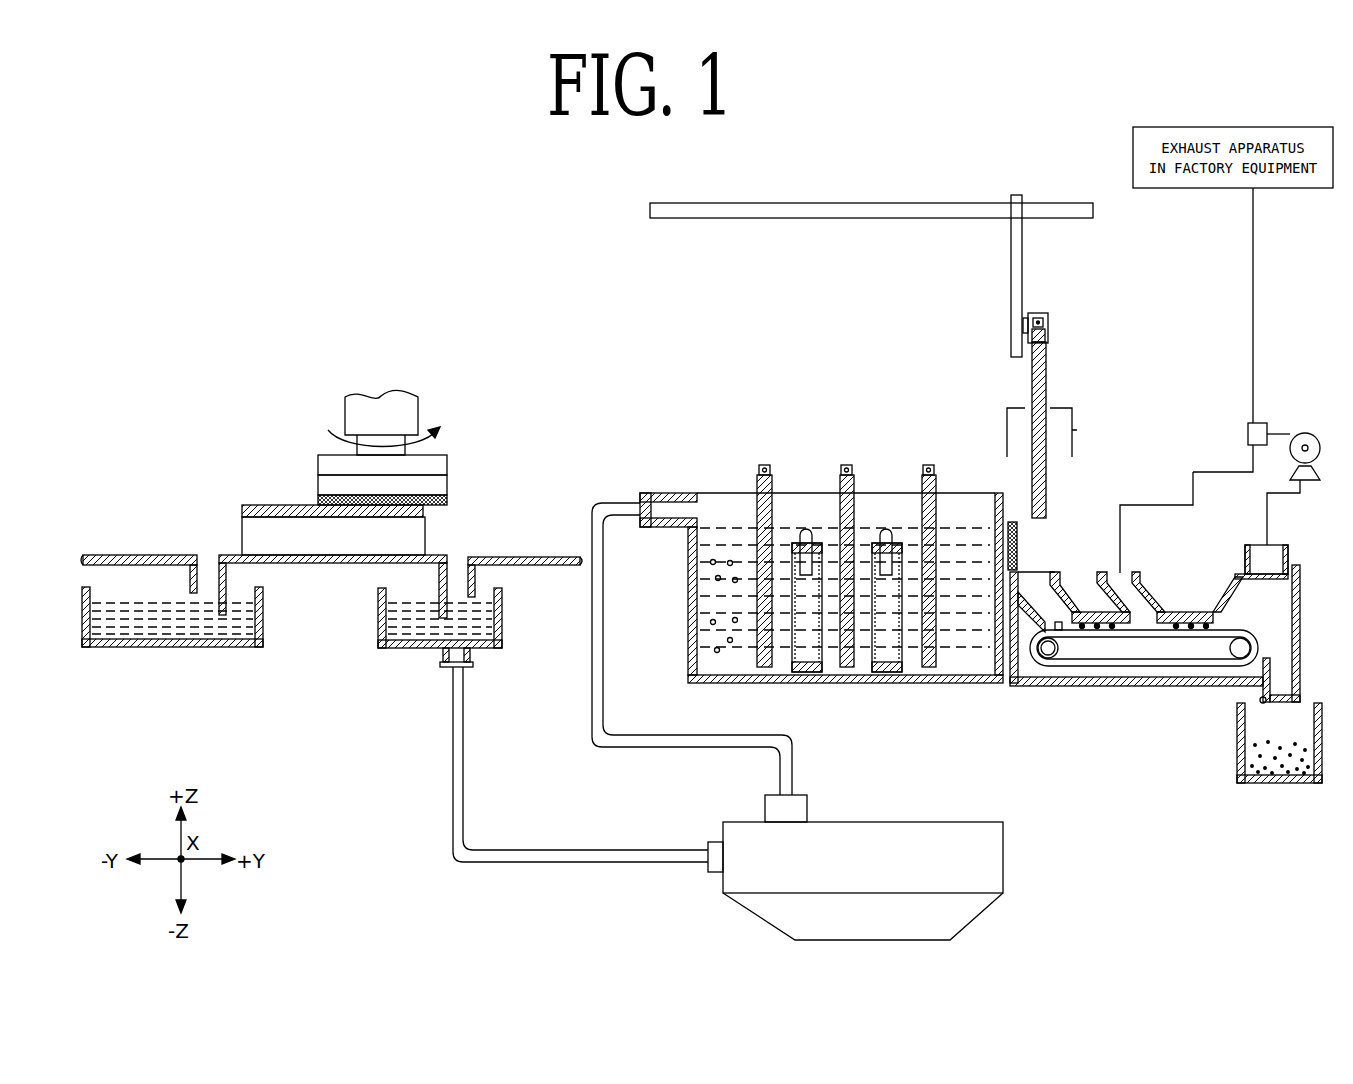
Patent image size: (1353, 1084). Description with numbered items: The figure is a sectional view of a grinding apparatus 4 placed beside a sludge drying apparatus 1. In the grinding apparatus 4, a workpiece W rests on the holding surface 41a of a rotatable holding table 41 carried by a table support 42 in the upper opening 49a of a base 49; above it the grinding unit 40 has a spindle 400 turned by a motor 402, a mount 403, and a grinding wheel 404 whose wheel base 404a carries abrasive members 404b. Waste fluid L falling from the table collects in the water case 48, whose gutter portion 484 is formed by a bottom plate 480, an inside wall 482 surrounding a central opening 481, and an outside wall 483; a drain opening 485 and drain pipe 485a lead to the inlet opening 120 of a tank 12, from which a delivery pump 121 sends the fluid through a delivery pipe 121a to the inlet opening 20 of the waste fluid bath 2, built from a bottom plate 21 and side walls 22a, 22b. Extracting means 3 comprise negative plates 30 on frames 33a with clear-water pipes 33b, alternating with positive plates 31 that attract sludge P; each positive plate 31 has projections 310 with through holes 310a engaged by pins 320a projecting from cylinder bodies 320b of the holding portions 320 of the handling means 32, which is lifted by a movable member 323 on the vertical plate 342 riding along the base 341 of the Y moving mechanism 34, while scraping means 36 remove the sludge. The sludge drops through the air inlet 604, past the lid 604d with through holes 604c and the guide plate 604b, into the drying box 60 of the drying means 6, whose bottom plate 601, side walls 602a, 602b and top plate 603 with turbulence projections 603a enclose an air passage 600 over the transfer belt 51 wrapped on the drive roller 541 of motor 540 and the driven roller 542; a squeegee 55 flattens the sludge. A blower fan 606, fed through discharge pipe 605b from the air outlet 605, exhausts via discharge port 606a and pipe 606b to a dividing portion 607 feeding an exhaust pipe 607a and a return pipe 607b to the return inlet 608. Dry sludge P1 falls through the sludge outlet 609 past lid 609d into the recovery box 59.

The sludge drying apparatus 1 is at (740, 392).
The waste fluid bath 2 is at (969, 530).
The extracting means 3 is at (1143, 352).
The grinding apparatus 4 is at (260, 356).
The drying means 6 is at (1160, 472).
The tank 12 is at (1018, 861).
The inlet opening 20 is at (650, 493).
The bottom plate 21 is at (848, 690).
The side wall 22a is at (731, 523).
The side wall 22b is at (690, 600).
The negative plate 30 is at (810, 675).
The positive plate 31 is at (762, 470).
The handling means 32 is at (1055, 306).
The frame 33a is at (805, 545).
The pipe 33b is at (880, 565).
The Y moving mechanism 34 is at (1085, 235).
The scraping means 36 is at (1075, 430).
The grinding unit 40 is at (335, 384).
The holding table 41 is at (255, 535).
The holding surface 41a is at (262, 508).
The table support 42 is at (330, 563).
The water case 48 is at (140, 647).
The base 49 is at (135, 556).
The upper opening 49a is at (475, 568).
The transfer belt 51 is at (1110, 670).
The squeegee 55 is at (1058, 630).
The recovery box 59 is at (1270, 783).
The drying box 60 is at (1140, 686).
The inlet opening 120 is at (712, 860).
The delivery pump 121 is at (800, 805).
The delivery pipe 121a is at (650, 747).
The projection 310 is at (848, 470).
The through hole 310a is at (850, 495).
The holding portion 320 is at (1015, 290).
The pin 320a is at (1050, 320).
The cylinder body 320b is at (1040, 315).
The movable member 323 is at (1025, 325).
The base 341 is at (762, 212).
The vertical plate 342 is at (1011, 300).
The spindle 400 is at (395, 415).
The motor 402 is at (418, 414).
The mount 403 is at (325, 455).
The grinding wheel 404 is at (302, 480).
The wheel base 404a is at (440, 485).
The abrasive member 404b is at (318, 500).
The bottom plate 480 is at (215, 647).
The central opening 481 is at (345, 620).
The inside wall 482 is at (258, 600).
The outside wall 483 is at (86, 620).
The gutter portion 484 is at (200, 630).
The drain opening 485 is at (457, 672).
The drain pipe 485a is at (560, 862).
The motor 540 is at (1048, 655).
The drive roller 541 is at (1058, 648).
The driven roller 542 is at (1240, 655).
The air passage 600 is at (1165, 640).
The bottom plate 601 is at (1150, 686).
The side wall 602a is at (1265, 560).
The side wall 602b is at (1010, 680).
The top plate 603 is at (1205, 620).
The projection 603a is at (1185, 615).
The air inlet 604 is at (1030, 575).
The guide plate 604b is at (1030, 610).
The through hole 604c is at (1012, 535).
The lid 604d is at (1010, 560).
The air outlet 605 is at (1280, 600).
The discharge pipe 605b is at (1267, 510).
The blower fan 606 is at (1305, 440).
The discharge port 606a is at (1300, 485).
The pipe 606b is at (1255, 425).
The dividing portion 607 is at (1250, 434).
The exhaust pipe 607a is at (1253, 285).
The return pipe 607b is at (1125, 520).
The return inlet 608 is at (1135, 580).
The sludge outlet 609 is at (1263, 700).
The lid 609d is at (1265, 700).
The waste fluid L is at (250, 600).
The sludge P is at (715, 578).
The dry sludge P1 is at (1290, 783).
The workpiece W is at (430, 500).